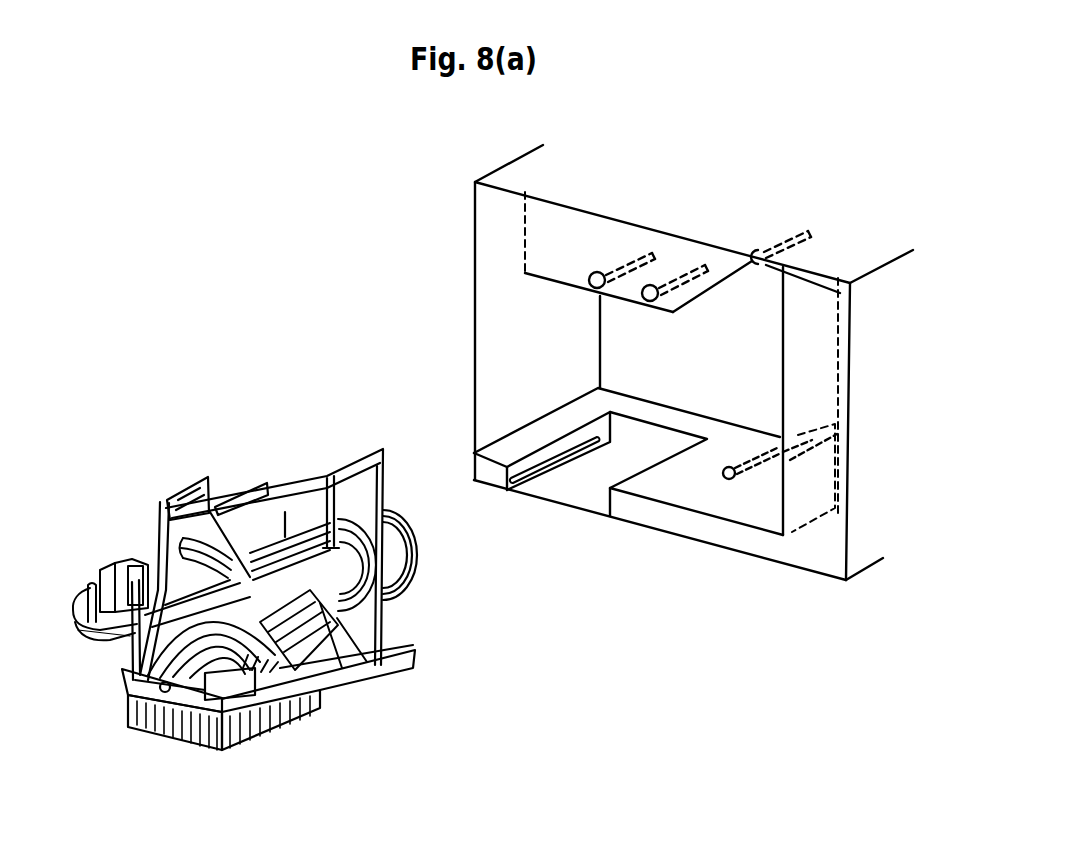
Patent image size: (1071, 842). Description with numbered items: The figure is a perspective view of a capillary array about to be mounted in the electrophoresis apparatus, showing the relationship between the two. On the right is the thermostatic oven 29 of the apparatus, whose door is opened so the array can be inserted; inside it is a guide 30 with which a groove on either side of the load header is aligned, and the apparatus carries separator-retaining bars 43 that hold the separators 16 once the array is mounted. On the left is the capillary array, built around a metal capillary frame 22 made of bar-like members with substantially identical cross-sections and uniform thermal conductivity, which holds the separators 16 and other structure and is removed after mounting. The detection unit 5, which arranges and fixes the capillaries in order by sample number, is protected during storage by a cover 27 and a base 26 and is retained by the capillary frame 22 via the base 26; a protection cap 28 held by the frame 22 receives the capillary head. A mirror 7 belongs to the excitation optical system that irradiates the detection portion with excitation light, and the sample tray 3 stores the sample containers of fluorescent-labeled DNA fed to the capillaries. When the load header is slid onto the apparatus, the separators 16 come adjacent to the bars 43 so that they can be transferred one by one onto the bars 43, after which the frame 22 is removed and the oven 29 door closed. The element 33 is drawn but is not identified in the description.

The thermostatic oven 29 is at (475, 222).
The bars 43 is at (788, 240).
The guide 30 is at (520, 483).
The separators 16 is at (370, 468).
The capillary frame 22 is at (410, 651).
The connector block 33 is at (130, 710).
The protection cap 28 is at (160, 570).
The mirror 7 is at (133, 548).
The detection unit 5 is at (115, 563).
The cover 27 is at (100, 568).
The base 26 is at (92, 585).
The sample tray 3 is at (75, 602).